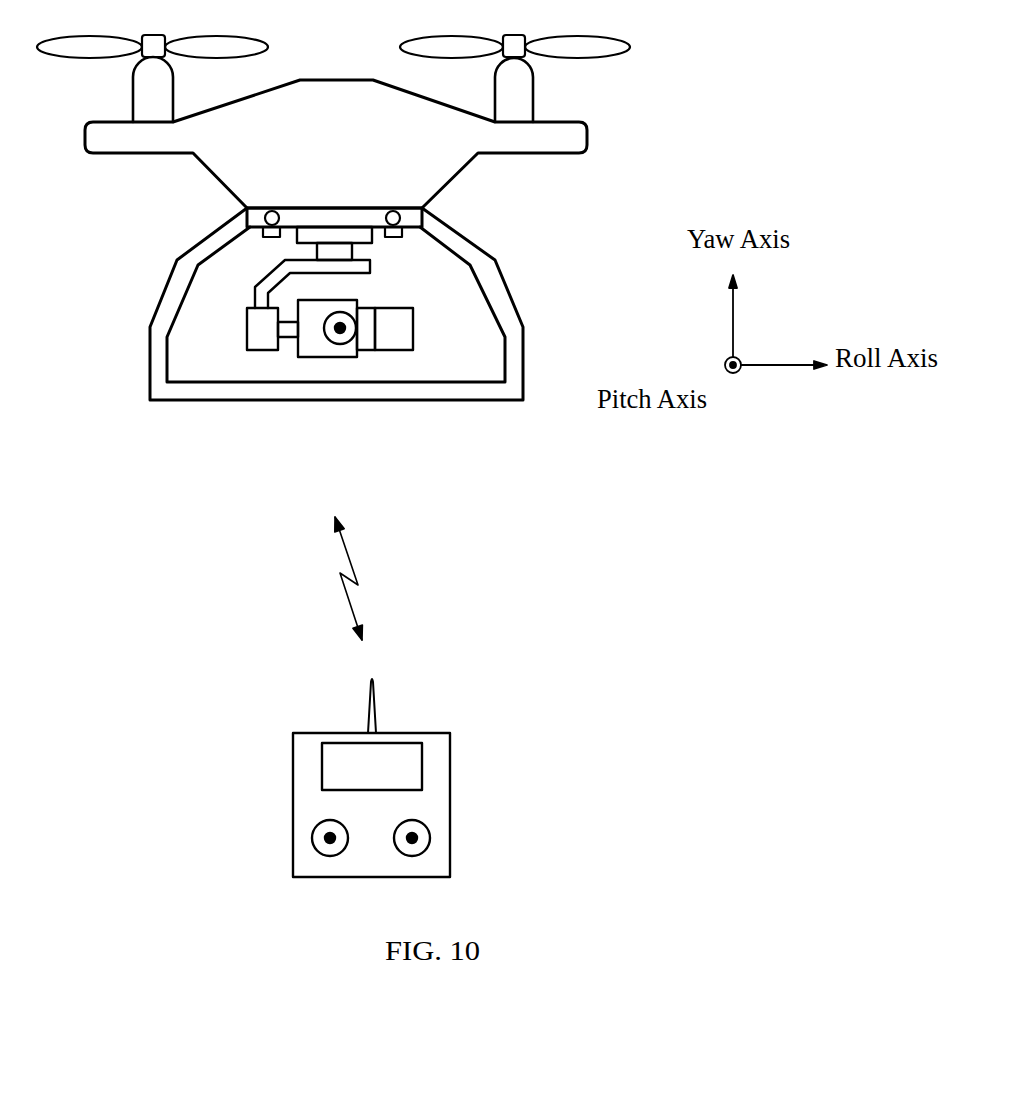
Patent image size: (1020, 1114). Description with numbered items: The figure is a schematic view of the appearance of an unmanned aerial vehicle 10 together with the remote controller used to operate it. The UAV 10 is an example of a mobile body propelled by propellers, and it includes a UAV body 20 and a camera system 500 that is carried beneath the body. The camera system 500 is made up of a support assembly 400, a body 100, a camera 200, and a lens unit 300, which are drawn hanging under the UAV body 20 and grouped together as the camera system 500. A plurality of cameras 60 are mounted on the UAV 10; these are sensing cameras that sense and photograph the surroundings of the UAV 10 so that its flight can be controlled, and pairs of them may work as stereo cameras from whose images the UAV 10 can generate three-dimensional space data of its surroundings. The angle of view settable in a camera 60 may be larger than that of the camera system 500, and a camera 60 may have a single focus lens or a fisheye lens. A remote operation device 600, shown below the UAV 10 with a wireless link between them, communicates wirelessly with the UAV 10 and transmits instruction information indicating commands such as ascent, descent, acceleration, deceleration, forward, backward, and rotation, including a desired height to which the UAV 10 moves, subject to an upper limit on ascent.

The unmanned aerial vehicle 10 is at (676, 115).
The UAV body 20 is at (334, 82).
The camera 60 is at (264, 240).
The body 100 is at (327, 357).
The camera 200 is at (367, 340).
The lens unit 300 is at (428, 377).
The support assembly 400 is at (276, 280).
The camera system 500 is at (341, 361).
The remote operation device 600 is at (452, 806).